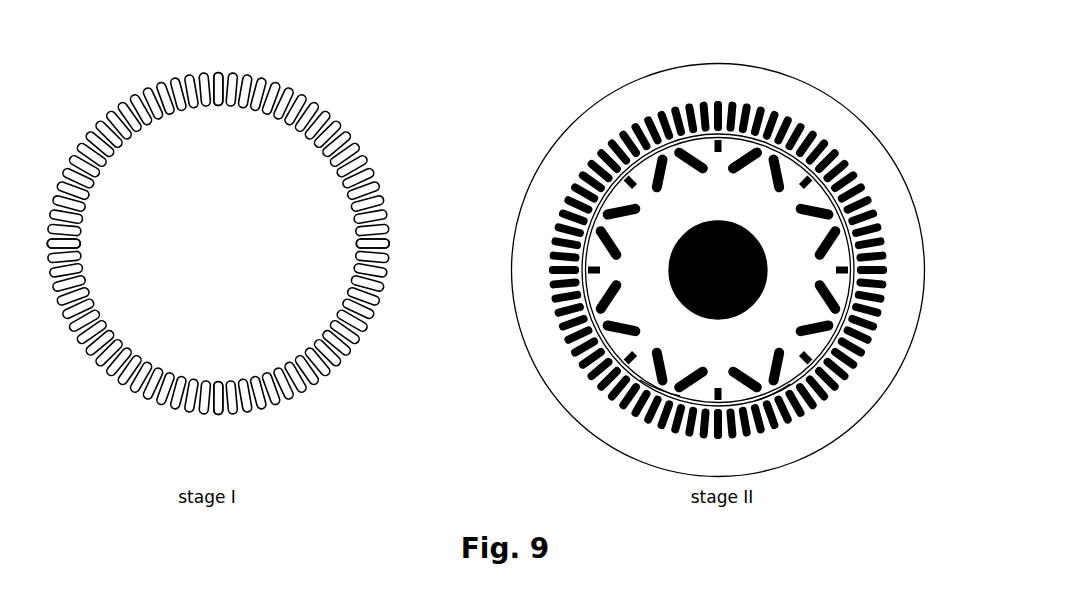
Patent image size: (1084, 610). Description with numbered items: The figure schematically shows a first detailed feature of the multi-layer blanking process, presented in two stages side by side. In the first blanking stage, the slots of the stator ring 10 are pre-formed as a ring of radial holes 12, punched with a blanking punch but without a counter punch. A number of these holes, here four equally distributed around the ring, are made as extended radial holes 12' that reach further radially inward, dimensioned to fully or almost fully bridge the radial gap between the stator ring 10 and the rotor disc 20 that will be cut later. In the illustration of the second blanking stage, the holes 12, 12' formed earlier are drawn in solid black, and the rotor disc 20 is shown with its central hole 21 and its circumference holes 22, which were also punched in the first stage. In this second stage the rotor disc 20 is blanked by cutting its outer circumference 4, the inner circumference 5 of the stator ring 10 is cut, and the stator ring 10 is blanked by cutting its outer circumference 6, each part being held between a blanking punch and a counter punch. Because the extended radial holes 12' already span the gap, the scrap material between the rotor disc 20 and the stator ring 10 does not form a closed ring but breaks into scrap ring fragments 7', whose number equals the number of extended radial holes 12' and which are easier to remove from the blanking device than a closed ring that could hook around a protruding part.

The radial holes 12 is at (458, 252).
The extended radial hole 12' is at (504, 233).
The scrap ring fragments 7' is at (762, 270).
The rotor disc 20 is at (798, 280).
The central hole 21 is at (703, 222).
The circumference holes 22 is at (726, 176).
The outer circumference 4 is at (668, 387).
The inner circumference 5 is at (767, 394).
The outer circumference 6 is at (867, 413).
The stator ring 10 is at (583, 398).